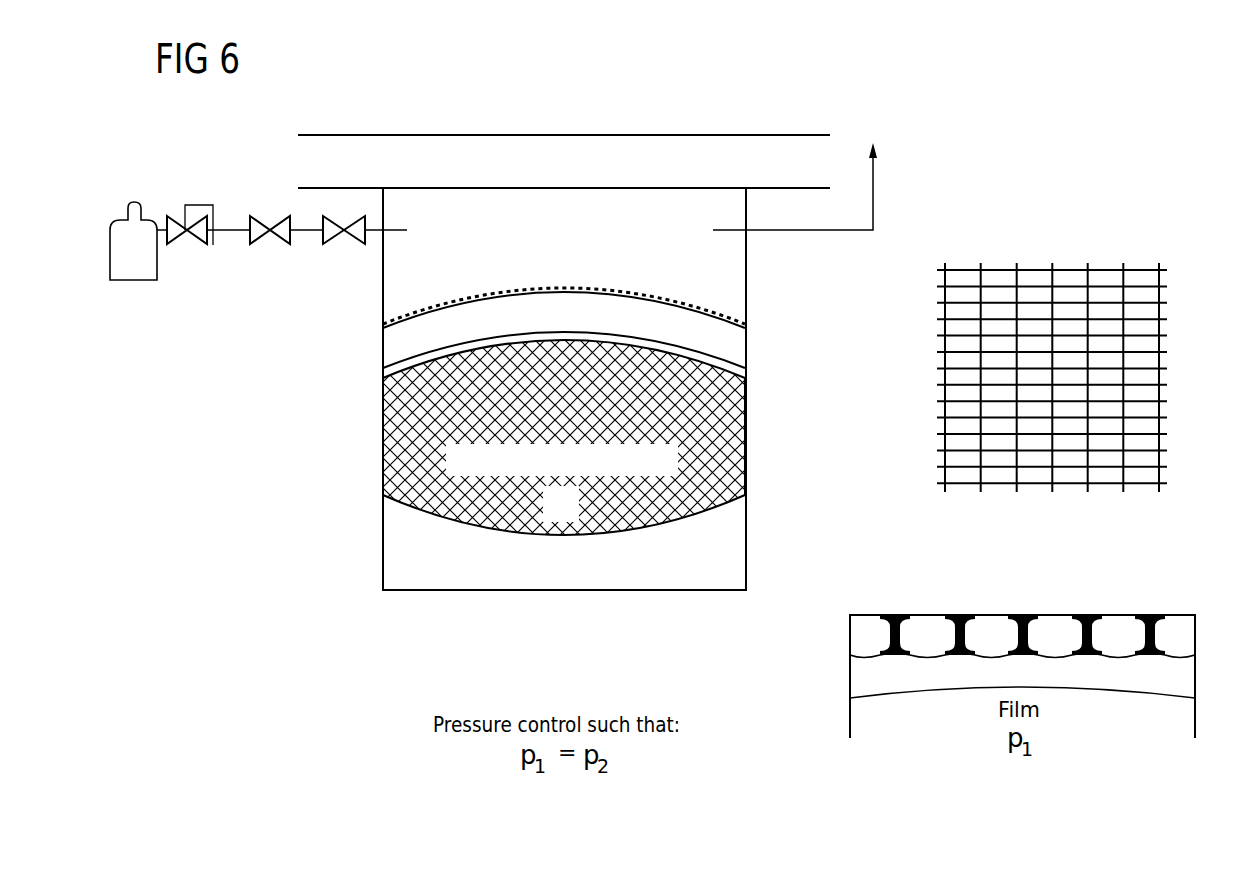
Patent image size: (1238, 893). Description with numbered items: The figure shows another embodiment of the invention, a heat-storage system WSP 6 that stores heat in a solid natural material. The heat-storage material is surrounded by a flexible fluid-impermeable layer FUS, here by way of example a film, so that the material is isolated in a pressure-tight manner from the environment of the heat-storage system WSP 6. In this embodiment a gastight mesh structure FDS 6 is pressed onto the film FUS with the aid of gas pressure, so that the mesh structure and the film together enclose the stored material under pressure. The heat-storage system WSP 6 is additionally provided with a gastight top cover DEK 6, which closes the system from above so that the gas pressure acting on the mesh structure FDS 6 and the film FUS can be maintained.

The heat-storage system WSP 6 is at (666, 92).
The gastight top cover DEK 6 is at (460, 147).
The gastight mesh structure FDS 6 is at (621, 366).
The flexible fluid-impermeable layer FUS is at (564, 328).